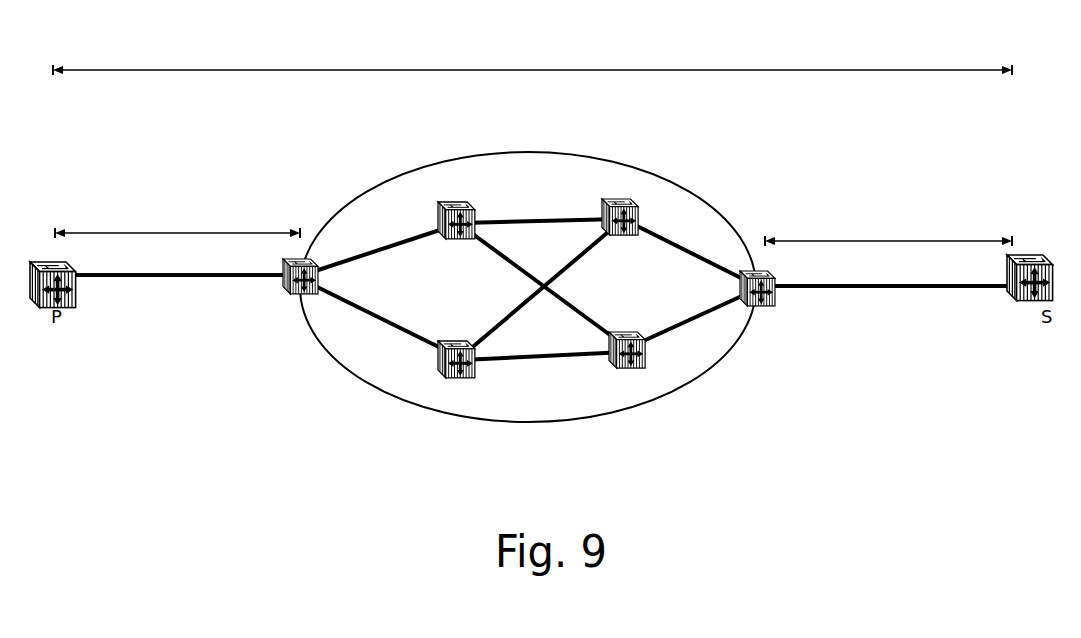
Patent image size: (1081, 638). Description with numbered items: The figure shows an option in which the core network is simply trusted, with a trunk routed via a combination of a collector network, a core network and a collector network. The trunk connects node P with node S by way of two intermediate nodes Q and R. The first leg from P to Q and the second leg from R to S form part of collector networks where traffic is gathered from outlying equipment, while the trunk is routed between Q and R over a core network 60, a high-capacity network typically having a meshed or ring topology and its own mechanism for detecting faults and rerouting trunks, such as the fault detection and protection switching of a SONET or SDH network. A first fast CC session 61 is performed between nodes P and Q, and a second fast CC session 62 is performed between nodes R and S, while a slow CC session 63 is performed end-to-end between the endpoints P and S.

The core network 60 is at (528, 260).
The first fast CC session 61 is at (181, 204).
The second fast CC session 62 is at (893, 212).
The slow CC session 63 is at (532, 41).